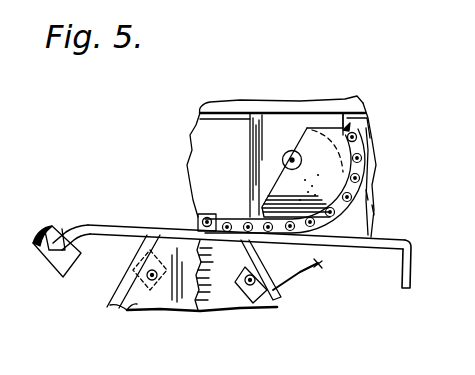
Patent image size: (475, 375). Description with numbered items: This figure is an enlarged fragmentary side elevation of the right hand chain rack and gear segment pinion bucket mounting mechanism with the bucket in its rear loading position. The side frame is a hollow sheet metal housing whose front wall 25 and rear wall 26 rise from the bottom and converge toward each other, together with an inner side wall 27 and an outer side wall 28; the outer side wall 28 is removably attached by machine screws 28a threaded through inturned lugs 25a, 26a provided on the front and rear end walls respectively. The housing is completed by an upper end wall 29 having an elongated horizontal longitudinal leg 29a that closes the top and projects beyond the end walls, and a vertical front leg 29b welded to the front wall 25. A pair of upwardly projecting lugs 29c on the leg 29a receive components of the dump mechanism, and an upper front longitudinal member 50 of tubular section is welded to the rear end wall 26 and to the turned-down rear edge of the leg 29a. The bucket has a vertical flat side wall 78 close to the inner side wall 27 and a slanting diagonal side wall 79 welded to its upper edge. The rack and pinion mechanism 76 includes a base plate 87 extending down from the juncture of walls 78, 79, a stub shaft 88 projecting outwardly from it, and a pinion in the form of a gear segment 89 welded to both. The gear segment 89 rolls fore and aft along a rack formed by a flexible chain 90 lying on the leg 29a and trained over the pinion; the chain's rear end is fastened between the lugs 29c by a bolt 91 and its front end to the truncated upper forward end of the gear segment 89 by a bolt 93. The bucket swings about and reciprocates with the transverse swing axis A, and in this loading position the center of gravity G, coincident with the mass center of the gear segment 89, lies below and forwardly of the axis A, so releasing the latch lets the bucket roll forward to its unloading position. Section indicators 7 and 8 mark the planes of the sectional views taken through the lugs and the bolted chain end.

The front wall 25 is at (277, 298).
The inturned lug 25a is at (258, 310).
The rear wall 26 is at (121, 297).
The inturned lug 26a is at (152, 239).
The inner side wall 27 is at (226, 303).
The outer side wall 28 is at (133, 300).
The machine screw 28a is at (147, 272).
The upper end wall 29 is at (153, 225).
The horizontal longitudinal leg 29a is at (92, 224).
The vertical front leg 29b is at (408, 268).
The upwardly projecting lug 29c is at (199, 215).
The upper front longitudinal member 50 is at (55, 263).
The rack and pinion mechanism 76 is at (350, 123).
The bucket side wall 78 is at (322, 266).
The diagonal side wall 79 is at (344, 108).
The base plate 87 is at (257, 113).
The stub shaft 88 is at (283, 152).
The gear segment 89 is at (283, 177).
The flexible chain 90 is at (372, 214).
The bolt 91 is at (226, 220).
The bolt 93 is at (362, 136).
The swing axis A is at (293, 151).
The center of gravity G is at (376, 196).
The section line 7- 7 is at (210, 188).
The section line 8- 8 is at (333, 137).